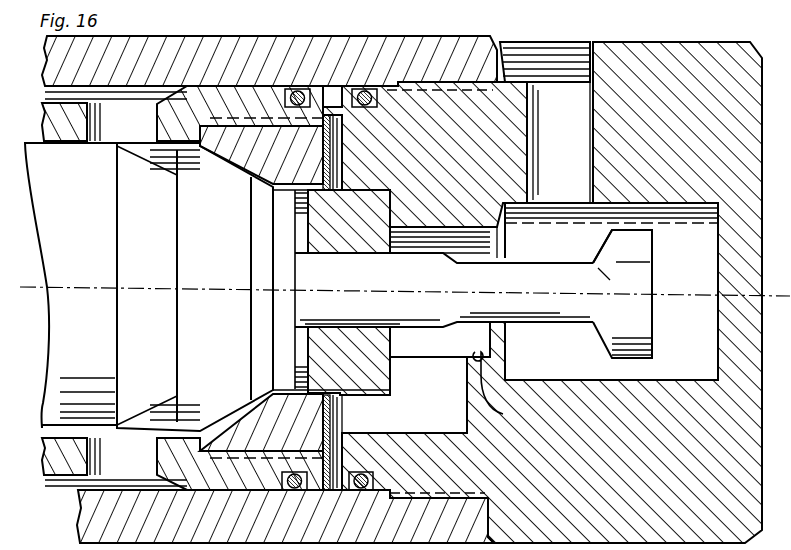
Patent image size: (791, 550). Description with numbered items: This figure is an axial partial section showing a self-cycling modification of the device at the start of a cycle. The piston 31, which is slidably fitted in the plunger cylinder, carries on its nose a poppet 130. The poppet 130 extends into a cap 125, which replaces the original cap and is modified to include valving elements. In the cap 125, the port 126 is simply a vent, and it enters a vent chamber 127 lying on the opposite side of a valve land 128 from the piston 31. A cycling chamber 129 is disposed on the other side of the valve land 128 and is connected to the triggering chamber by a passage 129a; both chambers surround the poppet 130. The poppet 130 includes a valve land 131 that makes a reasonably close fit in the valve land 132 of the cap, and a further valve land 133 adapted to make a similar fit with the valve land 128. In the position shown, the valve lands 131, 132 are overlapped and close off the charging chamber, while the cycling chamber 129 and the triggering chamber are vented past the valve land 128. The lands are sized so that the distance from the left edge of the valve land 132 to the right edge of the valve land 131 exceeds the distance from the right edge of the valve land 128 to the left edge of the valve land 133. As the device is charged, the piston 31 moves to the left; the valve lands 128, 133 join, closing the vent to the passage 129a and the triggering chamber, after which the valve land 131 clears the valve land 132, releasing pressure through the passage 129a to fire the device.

The piston 31 is at (84, 283).
The cap 125 is at (631, 497).
The port 126 is at (574, 182).
The vent chamber 127 is at (704, 271).
The valve land 128 is at (504, 390).
The cycling chamber 129 is at (430, 357).
The passage 129a is at (397, 423).
The poppet 130 is at (648, 221).
The valve land 131 is at (386, 319).
The valve land 132 is at (373, 242).
The valve land 133 is at (645, 291).